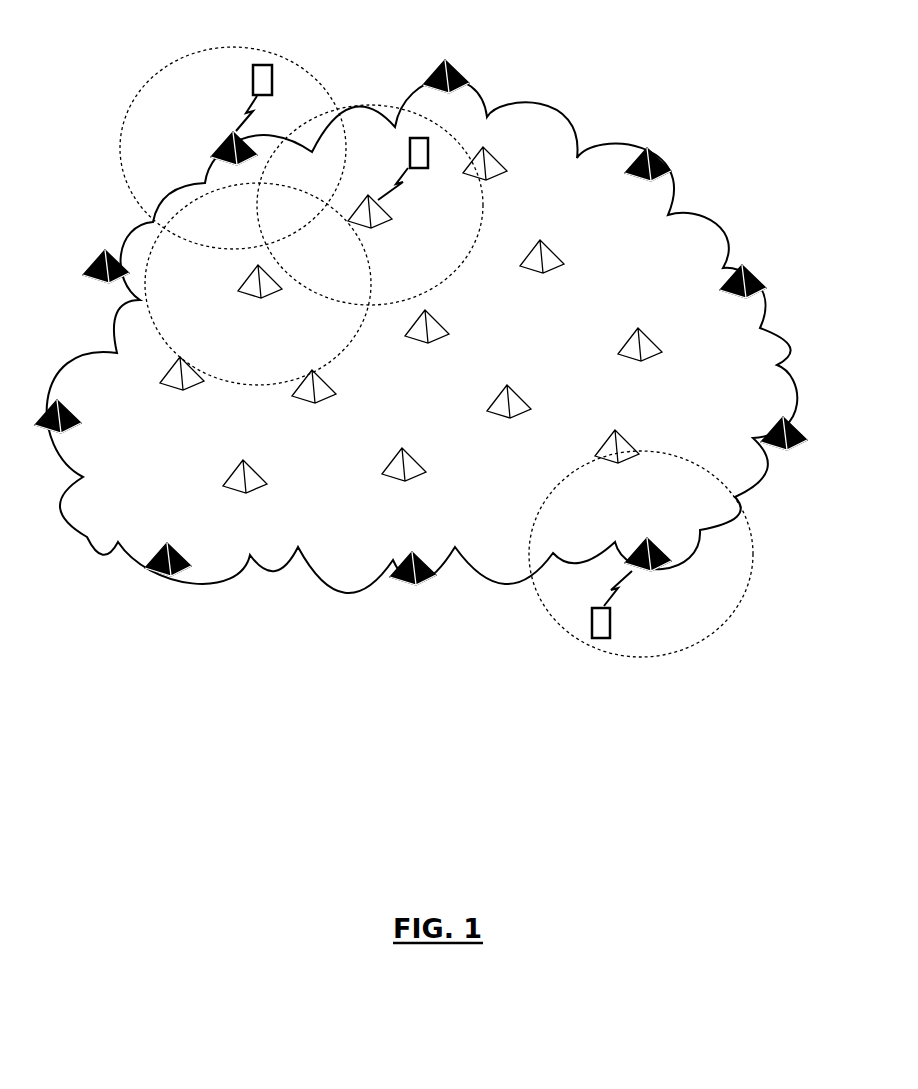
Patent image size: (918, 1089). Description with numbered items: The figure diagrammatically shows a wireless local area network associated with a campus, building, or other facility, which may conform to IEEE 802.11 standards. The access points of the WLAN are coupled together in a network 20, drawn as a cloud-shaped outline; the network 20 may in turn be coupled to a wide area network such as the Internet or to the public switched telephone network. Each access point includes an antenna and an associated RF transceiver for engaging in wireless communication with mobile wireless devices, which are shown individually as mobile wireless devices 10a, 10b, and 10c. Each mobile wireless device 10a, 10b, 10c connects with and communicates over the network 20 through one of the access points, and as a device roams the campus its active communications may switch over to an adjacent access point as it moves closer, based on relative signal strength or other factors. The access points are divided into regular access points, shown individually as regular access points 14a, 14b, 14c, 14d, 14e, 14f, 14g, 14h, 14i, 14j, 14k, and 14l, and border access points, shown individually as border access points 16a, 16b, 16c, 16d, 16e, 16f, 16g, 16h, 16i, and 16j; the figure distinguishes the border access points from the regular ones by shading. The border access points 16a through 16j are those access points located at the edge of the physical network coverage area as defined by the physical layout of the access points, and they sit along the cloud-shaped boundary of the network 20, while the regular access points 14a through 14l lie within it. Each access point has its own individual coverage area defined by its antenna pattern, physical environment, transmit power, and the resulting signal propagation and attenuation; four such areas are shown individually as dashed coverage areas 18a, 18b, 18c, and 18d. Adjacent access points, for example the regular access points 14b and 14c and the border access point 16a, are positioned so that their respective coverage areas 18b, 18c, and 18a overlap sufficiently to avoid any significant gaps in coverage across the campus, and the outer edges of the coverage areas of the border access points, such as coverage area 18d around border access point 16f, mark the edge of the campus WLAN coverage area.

The mobile wireless device 10a is at (252, 84).
The mobile wireless device 10b is at (407, 145).
The mobile wireless device 10c is at (610, 620).
The regular access point 14a is at (498, 168).
The regular access point 14b is at (390, 216).
The regular access point 14c is at (242, 283).
The regular access point 14d is at (164, 376).
The regular access point 14e is at (257, 468).
The regular access point 14f is at (333, 390).
The regular access point 14g is at (445, 331).
The regular access point 14h is at (563, 263).
The regular access point 14i is at (659, 350).
The regular access point 14j is at (528, 408).
The regular access point 14k is at (638, 452).
The regular access point 14l is at (424, 466).
The border access point 16a is at (222, 148).
The border access point 16b is at (446, 61).
The border access point 16c is at (652, 163).
The border access point 16d is at (746, 268).
The border access point 16e is at (767, 426).
The border access point 16f is at (653, 547).
The border access point 16g is at (427, 543).
The border access point 16h is at (187, 532).
The border access point 16i is at (69, 418).
The border access point 16j is at (101, 263).
The coverage area 18a is at (282, 57).
The coverage area 18b is at (463, 263).
The coverage area 18c is at (166, 328).
The coverage area 18d is at (542, 607).
The network 20 is at (567, 108).